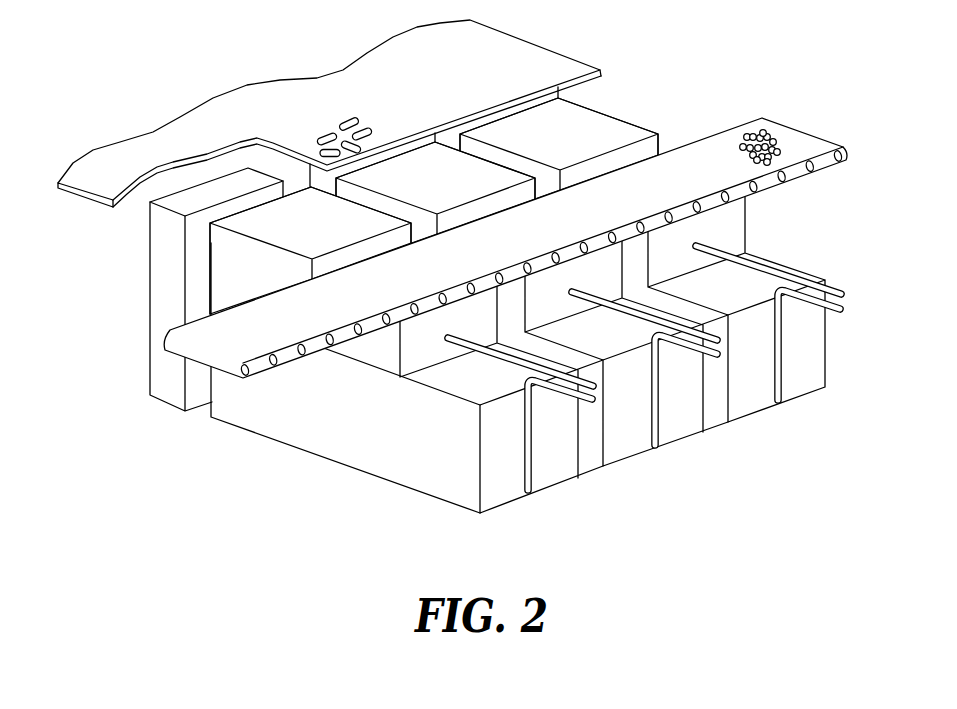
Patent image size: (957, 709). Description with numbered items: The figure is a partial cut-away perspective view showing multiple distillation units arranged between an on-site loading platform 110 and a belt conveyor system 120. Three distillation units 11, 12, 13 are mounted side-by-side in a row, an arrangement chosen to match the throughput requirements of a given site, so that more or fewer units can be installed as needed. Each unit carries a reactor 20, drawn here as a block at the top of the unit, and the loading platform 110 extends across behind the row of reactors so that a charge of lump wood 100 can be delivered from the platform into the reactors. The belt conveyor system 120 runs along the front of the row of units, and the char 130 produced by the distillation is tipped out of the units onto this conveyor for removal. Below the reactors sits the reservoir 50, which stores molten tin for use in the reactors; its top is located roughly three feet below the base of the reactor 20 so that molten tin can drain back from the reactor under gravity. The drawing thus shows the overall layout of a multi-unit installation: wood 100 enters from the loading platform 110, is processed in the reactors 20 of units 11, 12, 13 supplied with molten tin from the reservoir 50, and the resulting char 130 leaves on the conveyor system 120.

The loading platform 110 is at (538, 56).
The lump wood 100 is at (344, 116).
The belt conveyor system 120 is at (692, 148).
The char 130 is at (763, 131).
The reactor 20 is at (305, 243).
The reservoir 50 is at (347, 443).
The distillation unit 11 is at (553, 452).
The distillation unit 12 is at (673, 415).
The distillation unit 13 is at (797, 375).